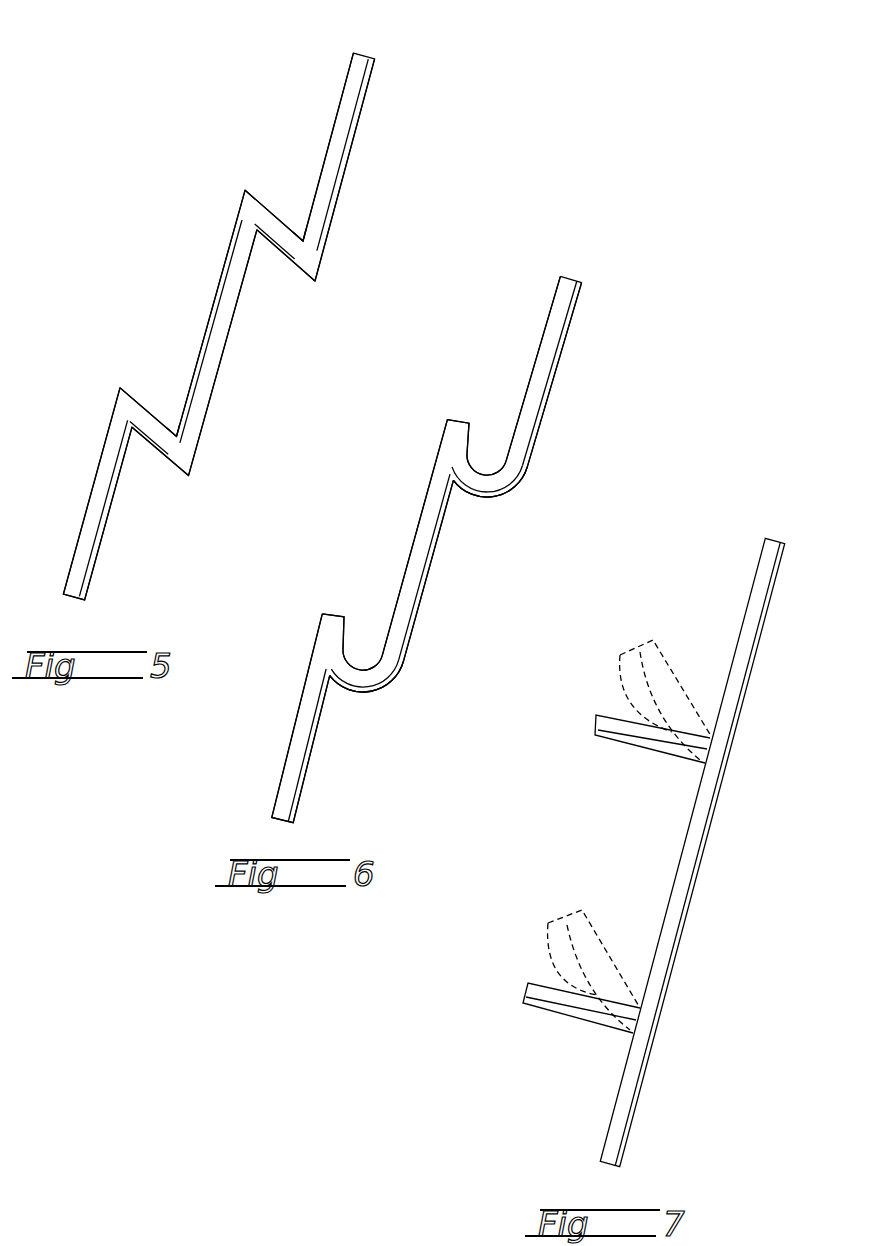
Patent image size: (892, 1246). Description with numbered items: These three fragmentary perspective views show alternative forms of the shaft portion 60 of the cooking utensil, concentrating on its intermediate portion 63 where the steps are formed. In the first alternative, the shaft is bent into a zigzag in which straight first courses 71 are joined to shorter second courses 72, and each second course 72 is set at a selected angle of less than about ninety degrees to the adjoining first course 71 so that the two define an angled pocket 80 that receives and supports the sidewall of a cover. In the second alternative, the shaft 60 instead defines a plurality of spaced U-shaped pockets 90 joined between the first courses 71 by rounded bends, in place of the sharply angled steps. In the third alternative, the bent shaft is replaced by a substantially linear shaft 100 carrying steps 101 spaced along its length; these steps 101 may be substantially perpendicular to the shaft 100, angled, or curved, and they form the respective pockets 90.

In FIG. 5, the shaft portion 60 is at (212, 242).
In FIG. 6, the shaft portion 60 is at (487, 578).
In FIG. 5, the intermediate portion 63 is at (217, 333).
In FIG. 6, the intermediate portion 63 is at (433, 505).
In FIG. 5, the first courses 71 is at (340, 158).
In FIG. 6, the first courses 71 is at (547, 378).
In FIG. 5, the second courses 72 is at (275, 222).
In FIG. 6, the second courses 72 is at (473, 483).
In FIG. 5, the angled pocket 80 is at (302, 238).
In FIG. 6, the U-shaped pockets 90 is at (498, 452).
In FIG. 7, the U-shaped pockets 90 is at (698, 676).
In FIG. 7, the linear shaft 100 is at (690, 875).
In FIG. 7, the steps 101 is at (660, 766).